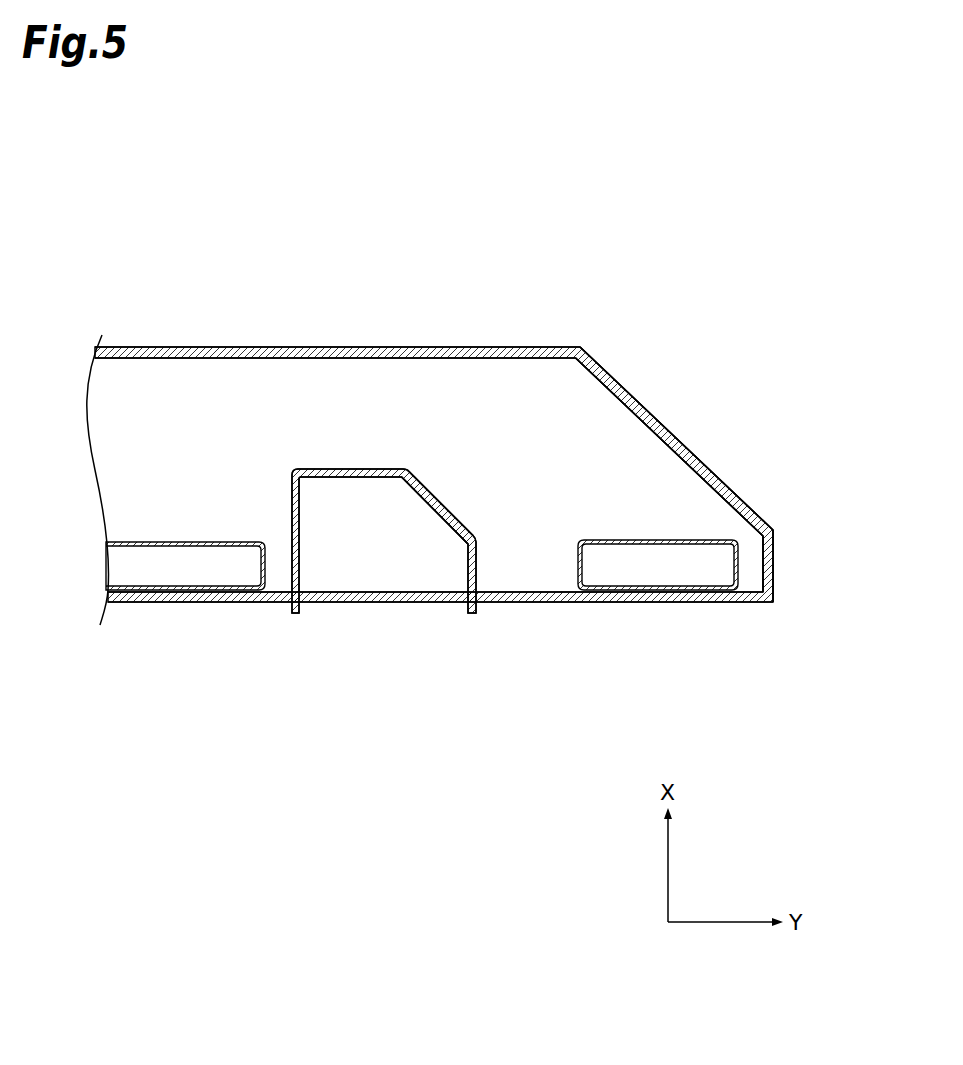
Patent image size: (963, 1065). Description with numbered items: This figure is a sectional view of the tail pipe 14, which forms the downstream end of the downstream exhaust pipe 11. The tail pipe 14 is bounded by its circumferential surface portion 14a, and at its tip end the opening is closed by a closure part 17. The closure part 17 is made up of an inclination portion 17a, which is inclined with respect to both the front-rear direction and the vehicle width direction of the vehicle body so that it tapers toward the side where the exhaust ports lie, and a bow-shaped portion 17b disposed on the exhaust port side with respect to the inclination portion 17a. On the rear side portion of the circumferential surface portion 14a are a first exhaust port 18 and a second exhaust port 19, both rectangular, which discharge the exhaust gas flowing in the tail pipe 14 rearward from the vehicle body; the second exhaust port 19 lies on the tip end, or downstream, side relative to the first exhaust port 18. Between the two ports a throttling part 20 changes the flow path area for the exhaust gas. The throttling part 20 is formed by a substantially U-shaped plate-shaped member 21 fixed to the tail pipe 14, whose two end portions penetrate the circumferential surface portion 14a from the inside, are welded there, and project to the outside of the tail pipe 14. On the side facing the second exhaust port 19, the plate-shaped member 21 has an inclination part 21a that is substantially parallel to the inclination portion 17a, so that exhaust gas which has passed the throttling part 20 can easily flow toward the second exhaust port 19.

The downstream exhaust pipe 11 is at (205, 306).
The tail pipe 14 is at (298, 347).
The circumferential surface portion 14a is at (517, 603).
The closure part 17 is at (877, 523).
The inclination portion 17a is at (758, 512).
The bow-shaped portion 17b is at (776, 573).
The first exhaust port 18 is at (187, 570).
The second exhaust port 19 is at (645, 570).
The throttling part 20 is at (384, 541).
The plate-shaped member 21 is at (360, 469).
The inclination part 21a is at (450, 512).